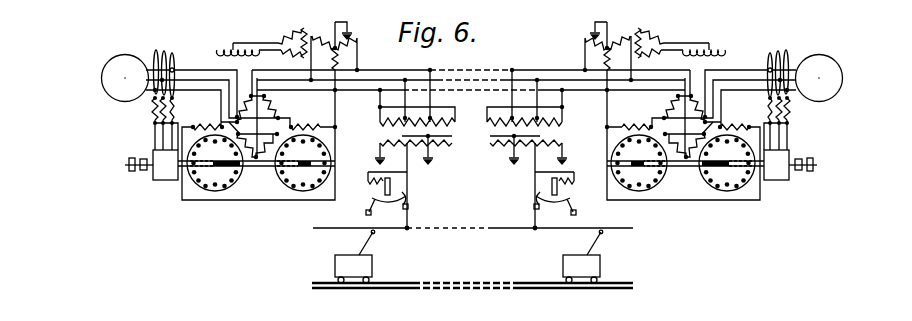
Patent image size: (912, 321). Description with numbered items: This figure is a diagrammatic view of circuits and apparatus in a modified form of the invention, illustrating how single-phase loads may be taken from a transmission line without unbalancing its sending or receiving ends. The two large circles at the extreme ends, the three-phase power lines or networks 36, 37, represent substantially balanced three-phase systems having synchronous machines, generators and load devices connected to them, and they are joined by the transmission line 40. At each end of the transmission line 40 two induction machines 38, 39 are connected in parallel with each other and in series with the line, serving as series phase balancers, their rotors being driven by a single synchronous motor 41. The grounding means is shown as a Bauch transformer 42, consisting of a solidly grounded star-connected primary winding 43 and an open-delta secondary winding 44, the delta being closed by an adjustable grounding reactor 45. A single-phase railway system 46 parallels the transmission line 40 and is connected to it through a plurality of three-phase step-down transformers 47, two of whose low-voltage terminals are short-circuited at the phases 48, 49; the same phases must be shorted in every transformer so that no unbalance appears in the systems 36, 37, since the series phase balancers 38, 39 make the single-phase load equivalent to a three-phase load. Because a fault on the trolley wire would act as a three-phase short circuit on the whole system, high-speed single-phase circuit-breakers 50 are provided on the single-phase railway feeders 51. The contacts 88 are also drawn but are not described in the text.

The three-phase power line or network 36 is at (113, 103).
The three-phase power line or network 37 is at (826, 101).
The induction machine 38 is at (230, 192).
The induction machine 39 is at (295, 193).
The transmission line 40 is at (452, 88).
The synchronous motor 41 is at (160, 181).
The Bauch transformer 42 is at (330, 32).
The star-connected primary winding 43 is at (334, 81).
The open-delta secondary winding 44 is at (288, 57).
The adjustable grounding reactor 45 is at (218, 54).
The single-phase railway system 46 is at (488, 228).
The three-phase step-down transformer 47 is at (452, 133).
The short-circuited phase 48 is at (377, 150).
The short-circuited phase 49 is at (437, 153).
The high-speed single-phase circuit-breaker 50 is at (409, 199).
The single-phase railway feeder 51 is at (410, 226).
The contacts 88 is at (165, 89).